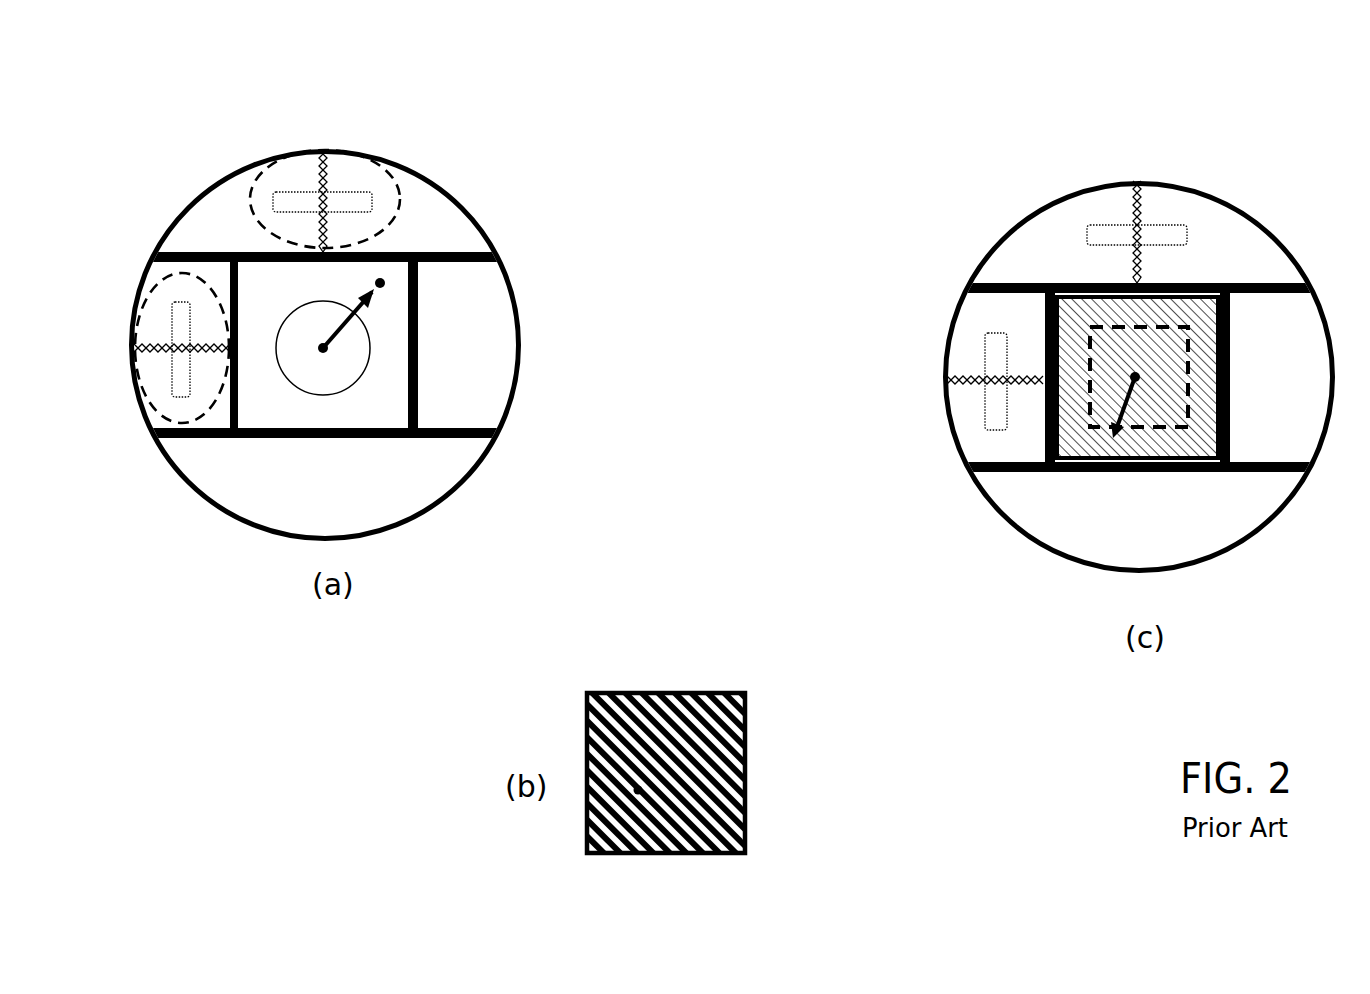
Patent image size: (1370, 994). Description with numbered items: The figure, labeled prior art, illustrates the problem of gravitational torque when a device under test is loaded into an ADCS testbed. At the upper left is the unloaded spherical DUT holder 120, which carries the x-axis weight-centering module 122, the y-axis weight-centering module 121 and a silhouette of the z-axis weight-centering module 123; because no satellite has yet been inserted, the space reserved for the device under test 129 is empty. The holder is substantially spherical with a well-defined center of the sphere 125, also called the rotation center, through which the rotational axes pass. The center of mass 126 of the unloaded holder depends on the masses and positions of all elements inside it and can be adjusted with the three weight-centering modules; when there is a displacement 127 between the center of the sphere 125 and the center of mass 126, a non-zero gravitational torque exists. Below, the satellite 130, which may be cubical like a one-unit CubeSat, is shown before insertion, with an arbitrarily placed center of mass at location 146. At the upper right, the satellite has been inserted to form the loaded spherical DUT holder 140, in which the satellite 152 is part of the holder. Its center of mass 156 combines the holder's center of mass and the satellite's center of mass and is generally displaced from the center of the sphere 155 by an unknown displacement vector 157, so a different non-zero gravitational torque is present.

The unloaded spherical DUT holder 120 is at (229, 171).
The y-axis weight-centering module 121 is at (393, 182).
The x-axis weight-centering module 122 is at (175, 418).
The z-axis weight-centering module 123 is at (362, 377).
The center of the sphere 125 is at (323, 348).
The center of mass of the unloaded spherical DUT holder 126 is at (380, 283).
The displacement 127 is at (365, 325).
The space reserved for the device under test 129 is at (360, 412).
The satellite 130 is at (759, 823).
The loaded spherical DUT holder 140 is at (1251, 212).
The center of mass of the satellite 146 is at (638, 790).
The satellite 152 is at (1137, 458).
The center of the sphere 155 is at (1147, 447).
The center of mass of the loaded spherical DUT holder 156 is at (1113, 437).
The displacement vector 157 is at (1117, 432).